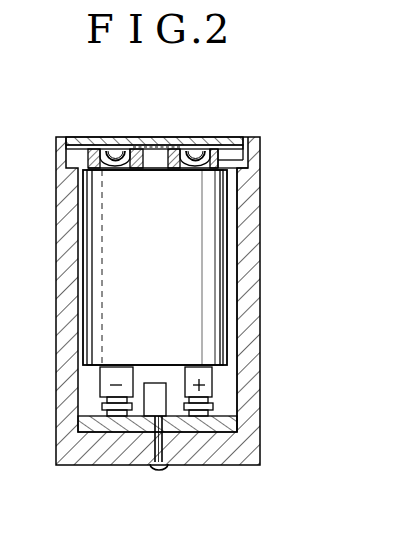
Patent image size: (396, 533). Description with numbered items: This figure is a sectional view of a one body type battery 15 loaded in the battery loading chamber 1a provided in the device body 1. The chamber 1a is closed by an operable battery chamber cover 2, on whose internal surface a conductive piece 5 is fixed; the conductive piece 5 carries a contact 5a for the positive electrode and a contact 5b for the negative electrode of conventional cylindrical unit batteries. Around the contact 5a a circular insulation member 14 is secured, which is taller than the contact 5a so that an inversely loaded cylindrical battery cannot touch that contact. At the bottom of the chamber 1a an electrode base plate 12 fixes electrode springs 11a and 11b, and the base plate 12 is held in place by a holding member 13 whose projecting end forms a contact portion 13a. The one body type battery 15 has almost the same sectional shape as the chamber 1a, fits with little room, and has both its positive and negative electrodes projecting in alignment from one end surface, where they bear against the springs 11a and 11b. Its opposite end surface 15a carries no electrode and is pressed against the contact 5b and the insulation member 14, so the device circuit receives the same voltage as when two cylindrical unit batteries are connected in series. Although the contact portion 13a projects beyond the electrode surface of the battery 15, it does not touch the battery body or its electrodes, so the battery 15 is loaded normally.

The device body 1 is at (251, 327).
The battery loading chamber 1a is at (234, 231).
The battery chamber cover 2 is at (233, 143).
The conductive piece 5 is at (166, 146).
The contact 5a is at (117, 157).
The contact 5b is at (196, 157).
The circular insulation member 14 is at (94, 149).
The one body type battery 15 is at (210, 266).
The end surface 15a is at (212, 168).
The electrode base plate 12 is at (248, 403).
The electrode spring 11a is at (109, 432).
The electrode spring 11b is at (204, 432).
The holding member 13 is at (152, 411).
The contact portion 13a is at (156, 382).